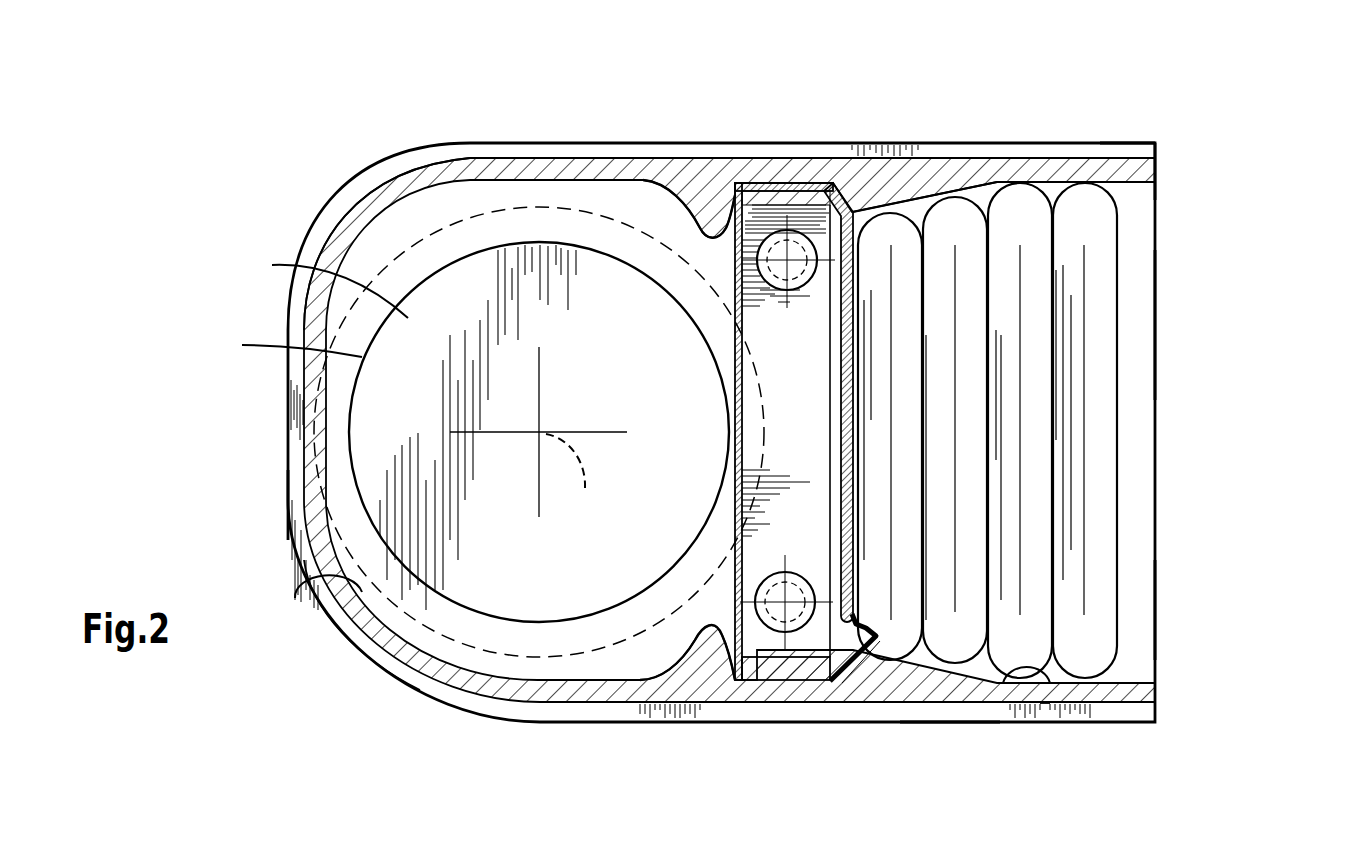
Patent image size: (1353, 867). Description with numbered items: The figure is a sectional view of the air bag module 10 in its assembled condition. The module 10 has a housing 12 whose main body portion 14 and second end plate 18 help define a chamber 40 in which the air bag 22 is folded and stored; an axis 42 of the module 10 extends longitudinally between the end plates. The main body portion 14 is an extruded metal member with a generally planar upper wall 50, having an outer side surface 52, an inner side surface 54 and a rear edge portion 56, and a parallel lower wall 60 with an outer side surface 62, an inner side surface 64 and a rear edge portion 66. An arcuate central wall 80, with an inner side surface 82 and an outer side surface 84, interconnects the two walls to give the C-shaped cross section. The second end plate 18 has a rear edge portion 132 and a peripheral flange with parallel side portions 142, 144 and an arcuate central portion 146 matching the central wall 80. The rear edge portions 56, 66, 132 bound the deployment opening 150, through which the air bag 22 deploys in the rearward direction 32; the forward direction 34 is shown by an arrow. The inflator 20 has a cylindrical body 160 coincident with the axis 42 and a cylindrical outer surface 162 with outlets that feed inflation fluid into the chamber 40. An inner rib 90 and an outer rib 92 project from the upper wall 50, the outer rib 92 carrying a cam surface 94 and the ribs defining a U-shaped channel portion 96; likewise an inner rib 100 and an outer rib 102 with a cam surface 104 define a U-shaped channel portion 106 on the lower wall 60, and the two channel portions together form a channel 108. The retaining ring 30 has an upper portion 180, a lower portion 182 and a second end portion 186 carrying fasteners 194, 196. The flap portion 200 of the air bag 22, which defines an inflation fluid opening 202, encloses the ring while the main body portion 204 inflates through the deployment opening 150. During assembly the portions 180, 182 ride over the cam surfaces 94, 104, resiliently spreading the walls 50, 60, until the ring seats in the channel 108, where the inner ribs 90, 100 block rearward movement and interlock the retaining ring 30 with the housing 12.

The air bag module 10 is at (775, 395).
The housing 12 is at (355, 200).
The main body portion 14 is at (457, 170).
The second end plate 18 is at (400, 175).
The inflator 20 is at (512, 628).
The air bag 22 is at (1047, 430).
The retaining ring 30 is at (761, 418).
The rearward direction 32 is at (1346, 313).
The forward direction 34 is at (1345, 245).
The chamber 40 is at (642, 205).
The axis 42 is at (538, 432).
The upper wall 50 is at (1080, 154).
The outer side surface 52 is at (1141, 156).
The inner side surface 54 is at (1028, 186).
The rear edge portion 56 is at (1156, 166).
The lower wall 60 is at (1047, 708).
The outer side surface 62 is at (1071, 706).
The inner side surface 64 is at (1015, 690).
The rear edge portion 66 is at (1156, 692).
The central wall 80 is at (298, 503).
The inner side surface 82 is at (330, 584).
The outer side surface 84 is at (370, 655).
The inner rib 90 is at (720, 205).
The outer rib 92 is at (872, 195).
The cam surface 94 is at (940, 196).
The U-shaped channel portion 96 is at (772, 190).
The inner rib 100 is at (708, 645).
The outer rib 102 is at (870, 690).
The cam surface 104 is at (920, 690).
The U-shaped channel portion 106 is at (763, 692).
The channel 108 is at (830, 425).
The rear edge portion 132 is at (1158, 616).
The side portion 142 is at (960, 165).
The side portion 144 is at (958, 712).
The central portion 146 is at (300, 405).
The deployment opening 150 is at (1156, 298).
The cylindrical body 160 is at (314, 285).
The cylindrical outer surface 162 is at (278, 347).
The upper portion 180 is at (800, 190).
The lower portion 182 is at (790, 690).
The second end portion 186 is at (770, 533).
The fastener 194 is at (718, 286).
The fastener 196 is at (783, 598).
The flap portion 200 is at (735, 282).
The inflation fluid opening 202 is at (732, 470).
The main body portion 204 is at (1088, 432).